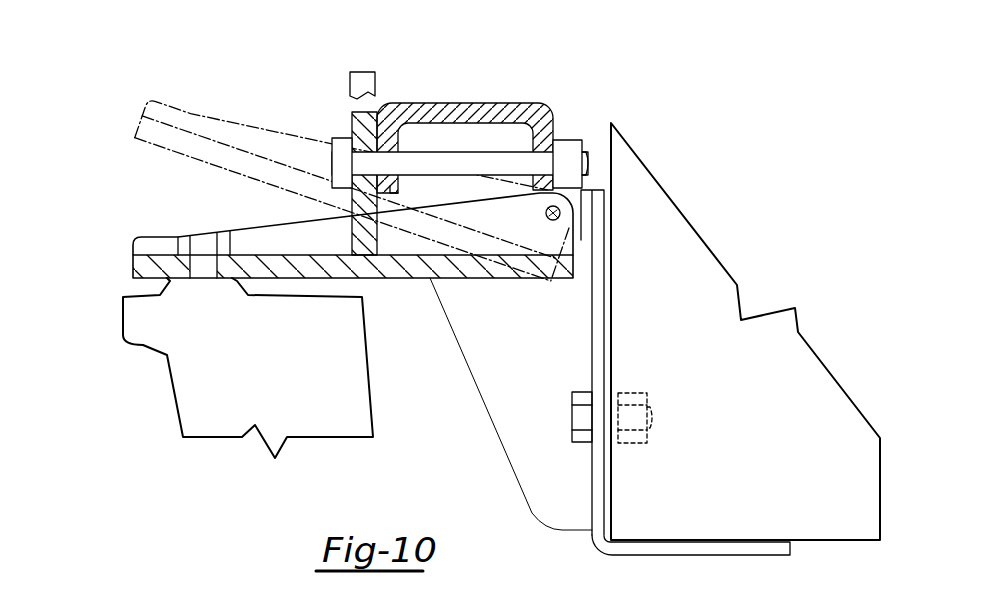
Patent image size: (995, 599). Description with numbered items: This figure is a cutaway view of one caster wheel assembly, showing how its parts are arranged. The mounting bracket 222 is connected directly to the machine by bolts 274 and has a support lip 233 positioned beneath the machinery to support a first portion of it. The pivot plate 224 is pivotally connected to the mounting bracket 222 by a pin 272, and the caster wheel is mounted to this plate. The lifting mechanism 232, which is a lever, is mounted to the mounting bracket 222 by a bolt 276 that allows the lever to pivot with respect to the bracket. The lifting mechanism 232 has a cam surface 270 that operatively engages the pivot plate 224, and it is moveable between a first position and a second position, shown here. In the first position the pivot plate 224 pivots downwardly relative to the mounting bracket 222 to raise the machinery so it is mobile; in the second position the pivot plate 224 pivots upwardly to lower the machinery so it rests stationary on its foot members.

The mounting bracket 222 is at (600, 467).
The pivot plate 224 is at (150, 130).
The lifting mechanism 232 is at (352, 122).
The support lip 233 is at (676, 549).
The cam surface 270 is at (348, 230).
The pin 272 is at (558, 218).
The bolts 274 is at (578, 418).
The bolt 276 is at (495, 160).